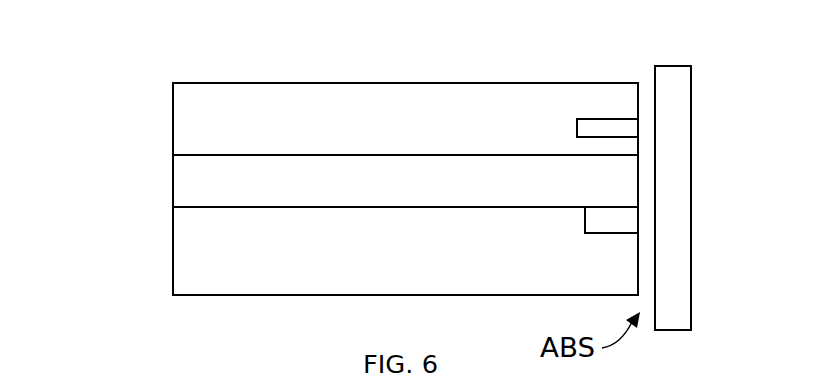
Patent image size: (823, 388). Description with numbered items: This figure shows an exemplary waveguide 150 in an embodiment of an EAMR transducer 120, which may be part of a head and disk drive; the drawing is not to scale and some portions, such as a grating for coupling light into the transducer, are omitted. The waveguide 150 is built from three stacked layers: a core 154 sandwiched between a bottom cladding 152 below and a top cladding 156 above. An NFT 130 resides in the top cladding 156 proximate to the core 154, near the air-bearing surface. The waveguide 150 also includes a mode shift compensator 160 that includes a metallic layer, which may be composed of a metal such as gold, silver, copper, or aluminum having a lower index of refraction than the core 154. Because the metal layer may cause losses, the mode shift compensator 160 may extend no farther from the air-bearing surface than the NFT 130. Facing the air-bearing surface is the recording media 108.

The EAMR transducer 120 is at (430, 60).
The top cladding 156 is at (172, 88).
The core 154 is at (172, 190).
The bottom cladding 152 is at (233, 295).
The NFT 130 is at (602, 119).
The mode shift compensator 160 is at (603, 233).
The recording media 108 is at (691, 288).
The waveguide 150 is at (82, 167).